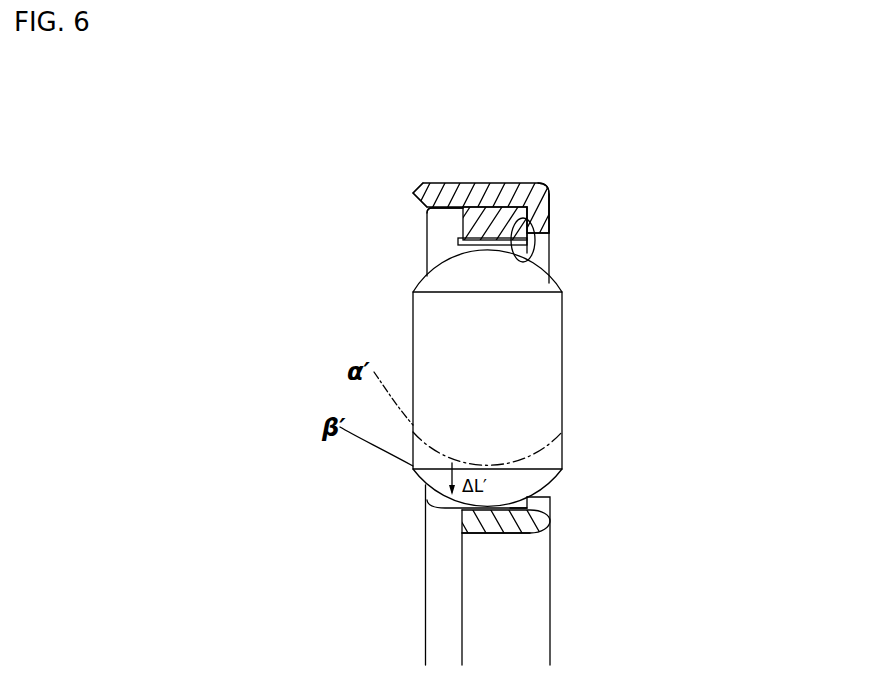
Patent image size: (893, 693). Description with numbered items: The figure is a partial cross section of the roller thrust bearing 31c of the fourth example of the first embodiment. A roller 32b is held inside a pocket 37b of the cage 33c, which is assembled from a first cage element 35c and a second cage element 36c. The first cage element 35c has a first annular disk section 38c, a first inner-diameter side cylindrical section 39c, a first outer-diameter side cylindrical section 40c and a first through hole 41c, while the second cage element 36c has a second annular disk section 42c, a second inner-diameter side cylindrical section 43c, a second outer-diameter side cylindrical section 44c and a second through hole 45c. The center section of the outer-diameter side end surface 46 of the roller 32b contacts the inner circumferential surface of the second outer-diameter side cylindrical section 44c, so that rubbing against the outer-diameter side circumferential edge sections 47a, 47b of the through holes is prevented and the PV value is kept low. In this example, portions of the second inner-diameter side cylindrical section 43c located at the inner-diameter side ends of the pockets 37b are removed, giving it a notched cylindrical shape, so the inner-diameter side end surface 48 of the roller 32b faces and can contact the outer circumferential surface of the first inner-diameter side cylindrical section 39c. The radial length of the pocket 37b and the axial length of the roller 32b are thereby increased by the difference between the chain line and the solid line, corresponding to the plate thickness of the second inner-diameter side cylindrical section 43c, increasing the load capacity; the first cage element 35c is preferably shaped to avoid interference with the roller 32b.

The roller thrust bearing 31c is at (576, 311).
The roller 32b is at (538, 383).
The cage 33c is at (512, 190).
The first cage element 35c is at (549, 188).
The second cage element 36c is at (428, 503).
The pocket 37b is at (562, 445).
The first annular disk section 38c is at (551, 488).
The first inner-diameter side cylindrical section 39c is at (498, 535).
The first outer-diameter side cylindrical section 40c is at (432, 183).
The first through hole 41c is at (549, 253).
The second annular disk section 42c is at (426, 488).
The second inner-diameter side cylindrical section 43c is at (446, 512).
The second outer-diameter side cylindrical section 44c is at (480, 200).
The second through hole 45c is at (550, 496).
The outer-diameter side end surface 46 is at (458, 240).
The outer-diameter side circumferential edge section 47a is at (535, 233).
The outer-diameter side circumferential edge section 47b is at (463, 209).
The inner-diameter side end surface 48 is at (530, 534).